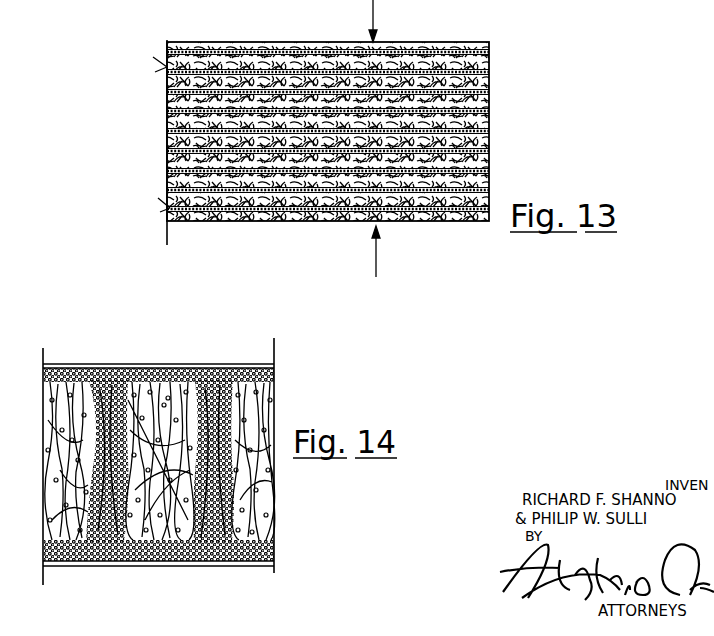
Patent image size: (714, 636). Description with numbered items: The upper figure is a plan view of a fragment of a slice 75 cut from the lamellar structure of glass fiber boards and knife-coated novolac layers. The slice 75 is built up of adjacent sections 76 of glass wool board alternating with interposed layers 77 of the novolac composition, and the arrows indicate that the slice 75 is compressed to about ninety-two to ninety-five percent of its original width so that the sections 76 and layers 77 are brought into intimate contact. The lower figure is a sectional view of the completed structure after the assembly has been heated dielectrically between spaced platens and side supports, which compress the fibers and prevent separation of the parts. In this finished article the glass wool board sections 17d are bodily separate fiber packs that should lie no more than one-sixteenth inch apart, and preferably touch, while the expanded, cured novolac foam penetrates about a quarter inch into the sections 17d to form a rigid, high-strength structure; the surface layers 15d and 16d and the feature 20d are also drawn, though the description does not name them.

In FIG. 13, the slice 75 is at (506, 130).
In FIG. 13, the sections of glass wool board 76 is at (482, 102).
In FIG. 13, the layers of novolac composition 77 is at (458, 72).
In FIG. 14, the top surface layer 15d is at (98, 366).
In FIG. 14, the bottom surface layer 16d is at (90, 568).
In FIG. 14, the glass wool board sections 17d is at (260, 437).
In FIG. 14, the bonded particle columns 20d is at (168, 396).